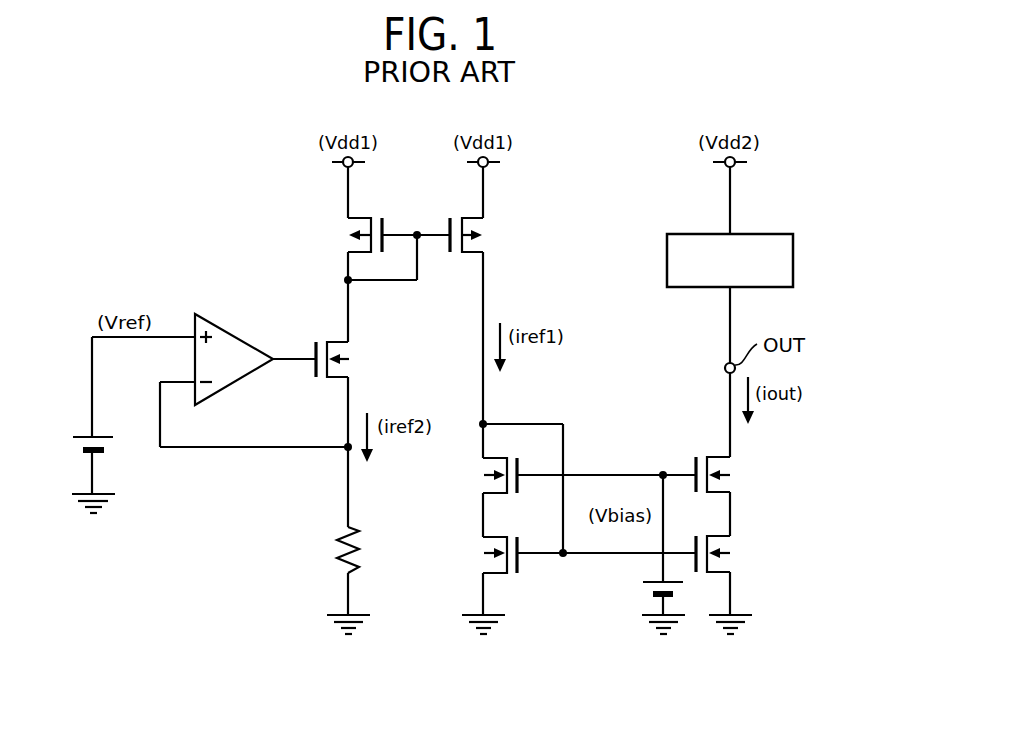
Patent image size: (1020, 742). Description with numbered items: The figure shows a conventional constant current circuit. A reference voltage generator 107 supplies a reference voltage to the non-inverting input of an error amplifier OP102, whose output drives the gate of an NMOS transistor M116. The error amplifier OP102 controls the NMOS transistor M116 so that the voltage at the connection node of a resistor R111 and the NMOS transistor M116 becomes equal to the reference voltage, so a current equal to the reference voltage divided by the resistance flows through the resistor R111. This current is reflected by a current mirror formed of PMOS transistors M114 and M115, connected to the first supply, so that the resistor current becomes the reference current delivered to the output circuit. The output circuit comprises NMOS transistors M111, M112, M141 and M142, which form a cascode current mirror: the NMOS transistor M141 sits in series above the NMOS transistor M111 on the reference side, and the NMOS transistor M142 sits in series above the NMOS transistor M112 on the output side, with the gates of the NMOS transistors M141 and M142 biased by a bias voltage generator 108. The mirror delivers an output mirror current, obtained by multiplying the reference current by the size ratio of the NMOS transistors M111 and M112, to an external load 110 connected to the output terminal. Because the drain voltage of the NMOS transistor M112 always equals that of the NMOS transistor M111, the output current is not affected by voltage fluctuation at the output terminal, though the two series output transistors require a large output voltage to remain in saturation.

The reference voltage generator 107 is at (122, 450).
The bias voltage generator 108 is at (632, 596).
The external load 110 is at (770, 233).
The error amplifier OP102 is at (220, 323).
The PMOS transistor M115 is at (352, 235).
The PMOS transistor M114 is at (482, 235).
The NMOS transistor M116 is at (363, 359).
The NMOS transistor M141 is at (545, 475).
The NMOS transistor M111 is at (562, 555).
The NMOS transistor M142 is at (727, 474).
The NMOS transistor M112 is at (744, 554).
The resistor R111 is at (323, 571).